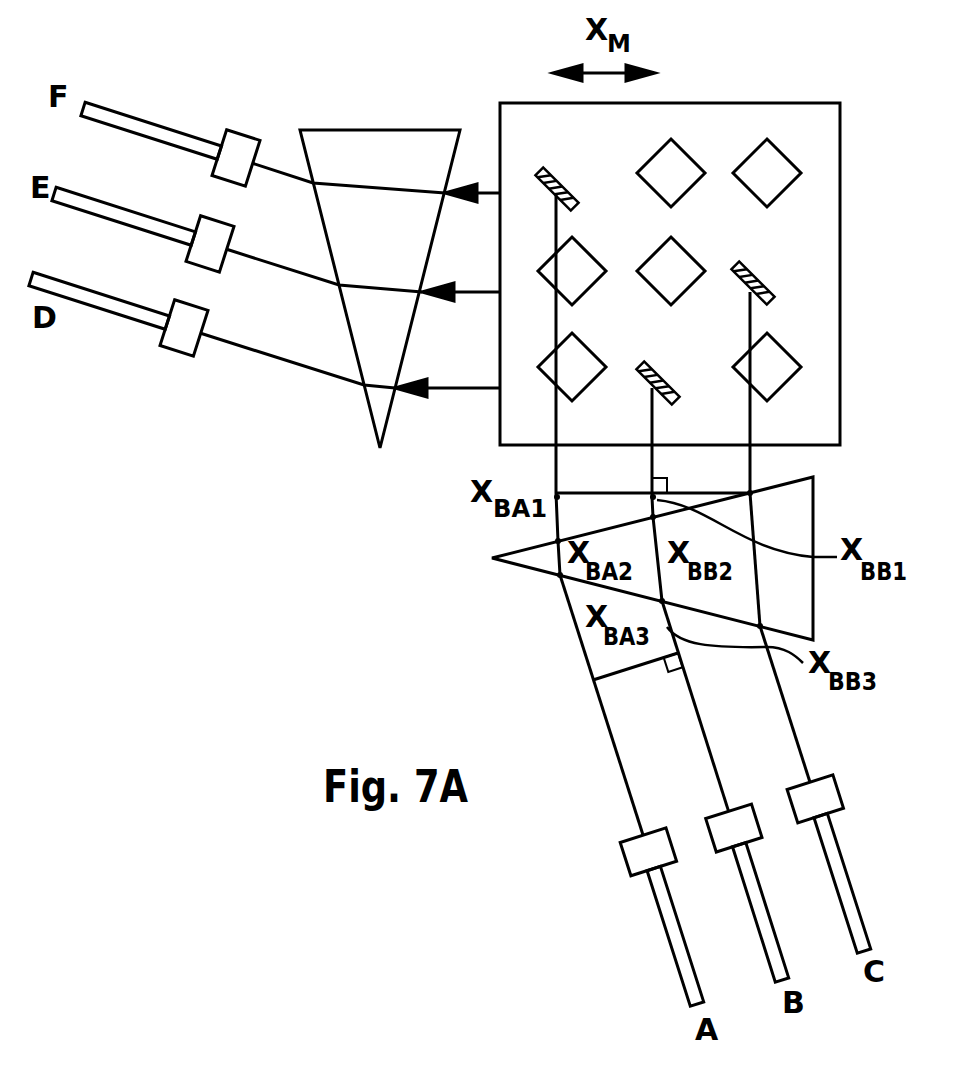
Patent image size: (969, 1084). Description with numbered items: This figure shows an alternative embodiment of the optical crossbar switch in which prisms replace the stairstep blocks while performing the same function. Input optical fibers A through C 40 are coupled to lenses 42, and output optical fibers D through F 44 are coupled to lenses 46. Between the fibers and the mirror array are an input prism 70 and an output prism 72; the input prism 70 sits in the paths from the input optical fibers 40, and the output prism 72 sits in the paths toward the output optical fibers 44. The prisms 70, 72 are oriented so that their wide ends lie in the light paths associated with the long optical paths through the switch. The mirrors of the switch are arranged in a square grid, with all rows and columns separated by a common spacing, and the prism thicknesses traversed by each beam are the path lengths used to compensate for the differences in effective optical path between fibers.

The input optical fibers 40 is at (663, 927).
The lenses 42 is at (623, 860).
The output optical fibers 44 is at (100, 315).
The lenses 46 is at (172, 353).
The input prism 70 is at (528, 568).
The output prism 72 is at (377, 130).